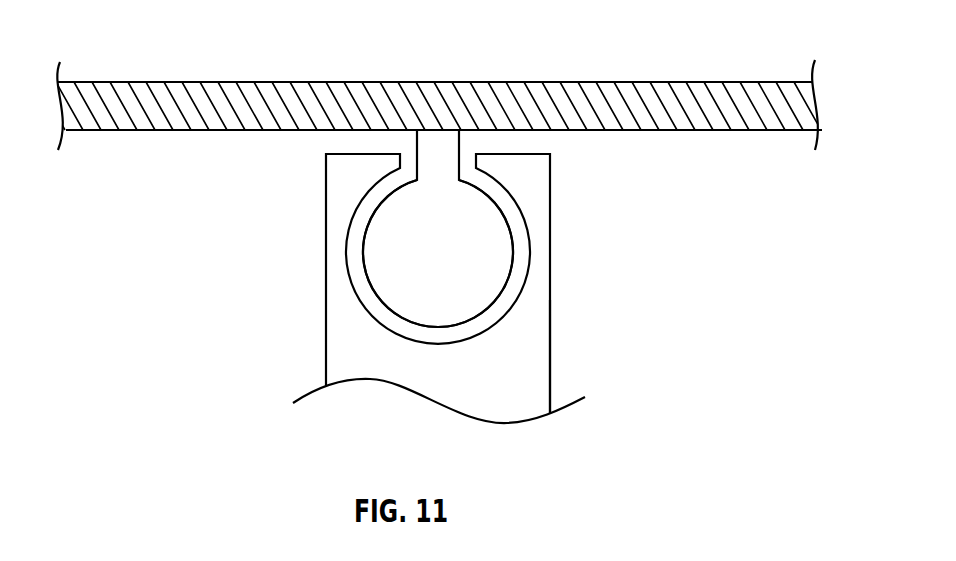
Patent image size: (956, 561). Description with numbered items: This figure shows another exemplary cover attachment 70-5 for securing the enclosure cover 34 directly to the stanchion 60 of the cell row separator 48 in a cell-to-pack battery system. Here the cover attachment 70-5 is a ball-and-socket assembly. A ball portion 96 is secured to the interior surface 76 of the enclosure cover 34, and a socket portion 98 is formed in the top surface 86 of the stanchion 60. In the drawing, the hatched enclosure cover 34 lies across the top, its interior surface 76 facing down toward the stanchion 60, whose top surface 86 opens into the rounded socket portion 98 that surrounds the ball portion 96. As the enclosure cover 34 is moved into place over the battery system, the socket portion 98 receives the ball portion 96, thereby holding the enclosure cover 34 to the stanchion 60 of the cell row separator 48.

The enclosure cover 34 is at (705, 97).
The interior surface 76 is at (228, 130).
The top surface 86 is at (363, 154).
The cover attachment 70-5 is at (406, 255).
The ball portion 96 is at (497, 249).
The socket portion 98 is at (462, 332).
The cell row separator 48 is at (380, 397).
The stanchion 60 is at (507, 392).